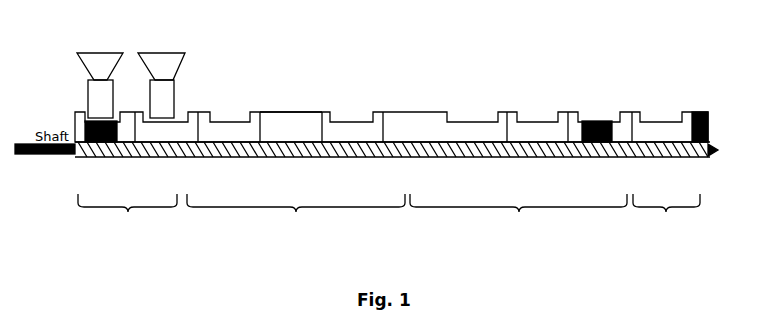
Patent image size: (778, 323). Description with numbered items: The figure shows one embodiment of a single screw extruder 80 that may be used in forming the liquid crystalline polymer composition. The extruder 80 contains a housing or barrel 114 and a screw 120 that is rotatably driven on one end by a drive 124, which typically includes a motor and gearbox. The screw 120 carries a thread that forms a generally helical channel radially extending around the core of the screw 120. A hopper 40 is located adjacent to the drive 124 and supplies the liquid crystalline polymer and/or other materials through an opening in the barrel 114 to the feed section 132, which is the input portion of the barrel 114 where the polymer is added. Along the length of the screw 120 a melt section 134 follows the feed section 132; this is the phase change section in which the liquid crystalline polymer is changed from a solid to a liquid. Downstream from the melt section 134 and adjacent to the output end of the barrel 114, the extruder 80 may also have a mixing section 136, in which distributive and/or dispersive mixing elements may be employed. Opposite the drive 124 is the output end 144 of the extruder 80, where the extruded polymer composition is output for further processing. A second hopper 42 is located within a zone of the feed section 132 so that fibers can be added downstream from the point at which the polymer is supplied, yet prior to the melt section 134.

The single screw extruder 80 is at (477, 74).
The hopper 40 is at (120, 54).
The hopper 42 is at (183, 54).
The drive 124 is at (89, 120).
The barrel 114 is at (320, 110).
The screw 120 is at (213, 157).
The feed section 132 is at (127, 214).
The melt section 134 is at (296, 214).
The mixing section 136 is at (518, 214).
The output end 144 is at (666, 214).